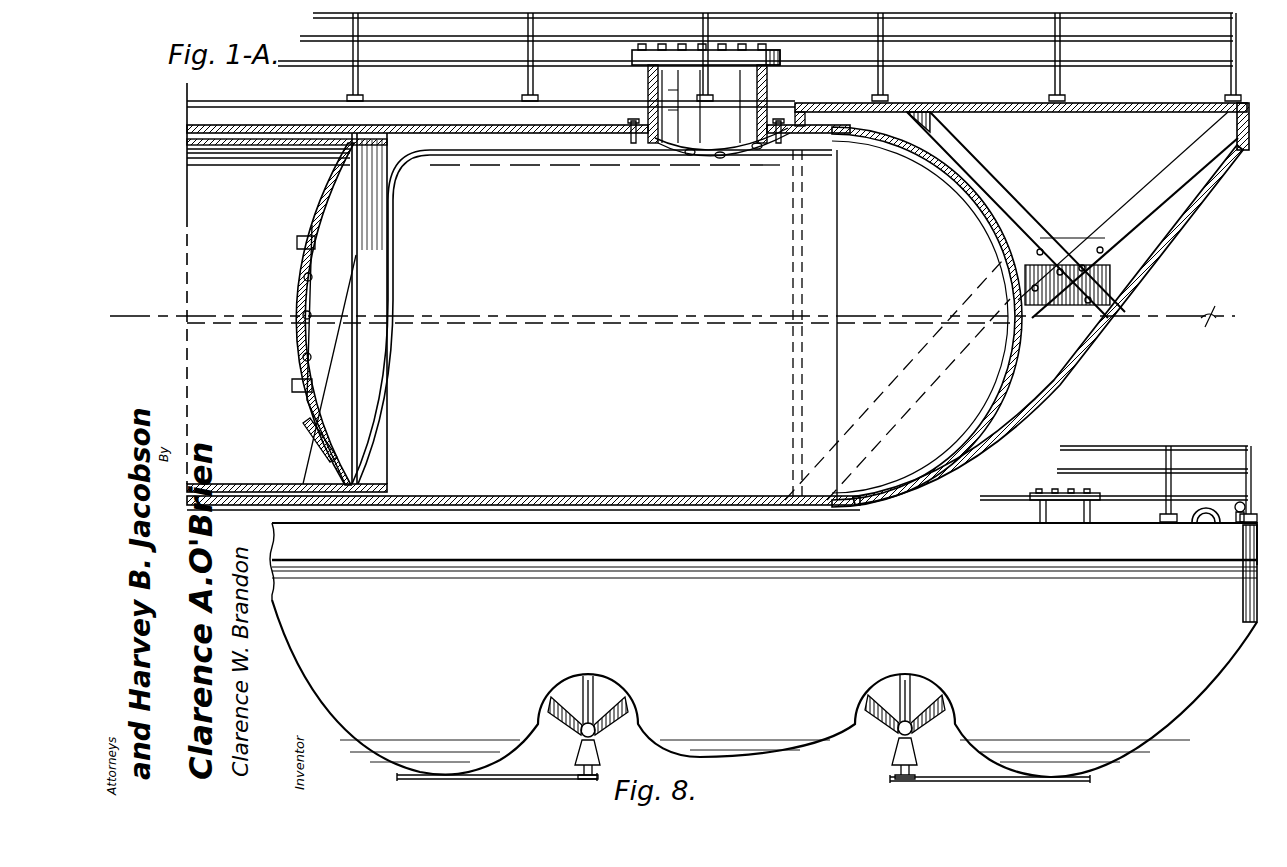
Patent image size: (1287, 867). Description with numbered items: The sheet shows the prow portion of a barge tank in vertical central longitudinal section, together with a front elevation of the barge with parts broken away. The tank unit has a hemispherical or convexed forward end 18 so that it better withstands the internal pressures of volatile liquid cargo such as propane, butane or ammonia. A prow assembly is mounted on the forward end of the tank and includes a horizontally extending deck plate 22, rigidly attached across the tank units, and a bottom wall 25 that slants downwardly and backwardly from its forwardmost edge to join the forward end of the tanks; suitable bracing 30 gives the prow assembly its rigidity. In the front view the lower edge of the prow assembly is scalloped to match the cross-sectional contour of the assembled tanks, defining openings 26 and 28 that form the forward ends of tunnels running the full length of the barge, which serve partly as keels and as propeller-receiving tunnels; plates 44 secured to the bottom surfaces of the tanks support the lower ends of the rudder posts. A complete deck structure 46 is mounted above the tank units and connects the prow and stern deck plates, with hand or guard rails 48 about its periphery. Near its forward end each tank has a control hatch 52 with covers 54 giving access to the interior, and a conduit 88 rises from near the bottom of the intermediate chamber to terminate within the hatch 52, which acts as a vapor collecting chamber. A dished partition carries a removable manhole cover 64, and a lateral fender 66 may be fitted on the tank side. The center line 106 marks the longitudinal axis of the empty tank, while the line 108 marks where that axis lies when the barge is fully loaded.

In FIG. 1A, the forward end 18 is at (985, 225).
In FIG. 1A, the deck plate 22 is at (1143, 112).
In FIG. 1A, the bottom wall 25 is at (1100, 338).
In FIG. 8, the bottom wall 25 is at (810, 745).
In FIG. 8, the opening 26 is at (556, 677).
In FIG. 8, the opening 28 is at (901, 672).
In FIG. 1A, the bracing 30 is at (1022, 220).
In FIG. 8, the plate 44 is at (543, 780).
In FIG. 1A, the deck structure 46 is at (410, 101).
In FIG. 1A, the guard rail 48 is at (1212, 18).
In FIG. 8, the guard rail 48 is at (1188, 447).
In FIG. 1A, the control hatch 52 is at (768, 96).
In FIG. 8, the control hatch 52 is at (1068, 512).
In FIG. 1A, the cover 54 is at (782, 57).
In FIG. 1A, the manhole cover 64 is at (312, 295).
In FIG. 1A, the lateral fender 66 is at (306, 205).
In FIG. 8, the lateral fender 66 is at (1248, 590).
In FIG. 1A, the conduit 88 is at (631, 173).
In FIG. 1A, the center line 106 is at (425, 315).
In FIG. 1A, the line 108 is at (447, 324).